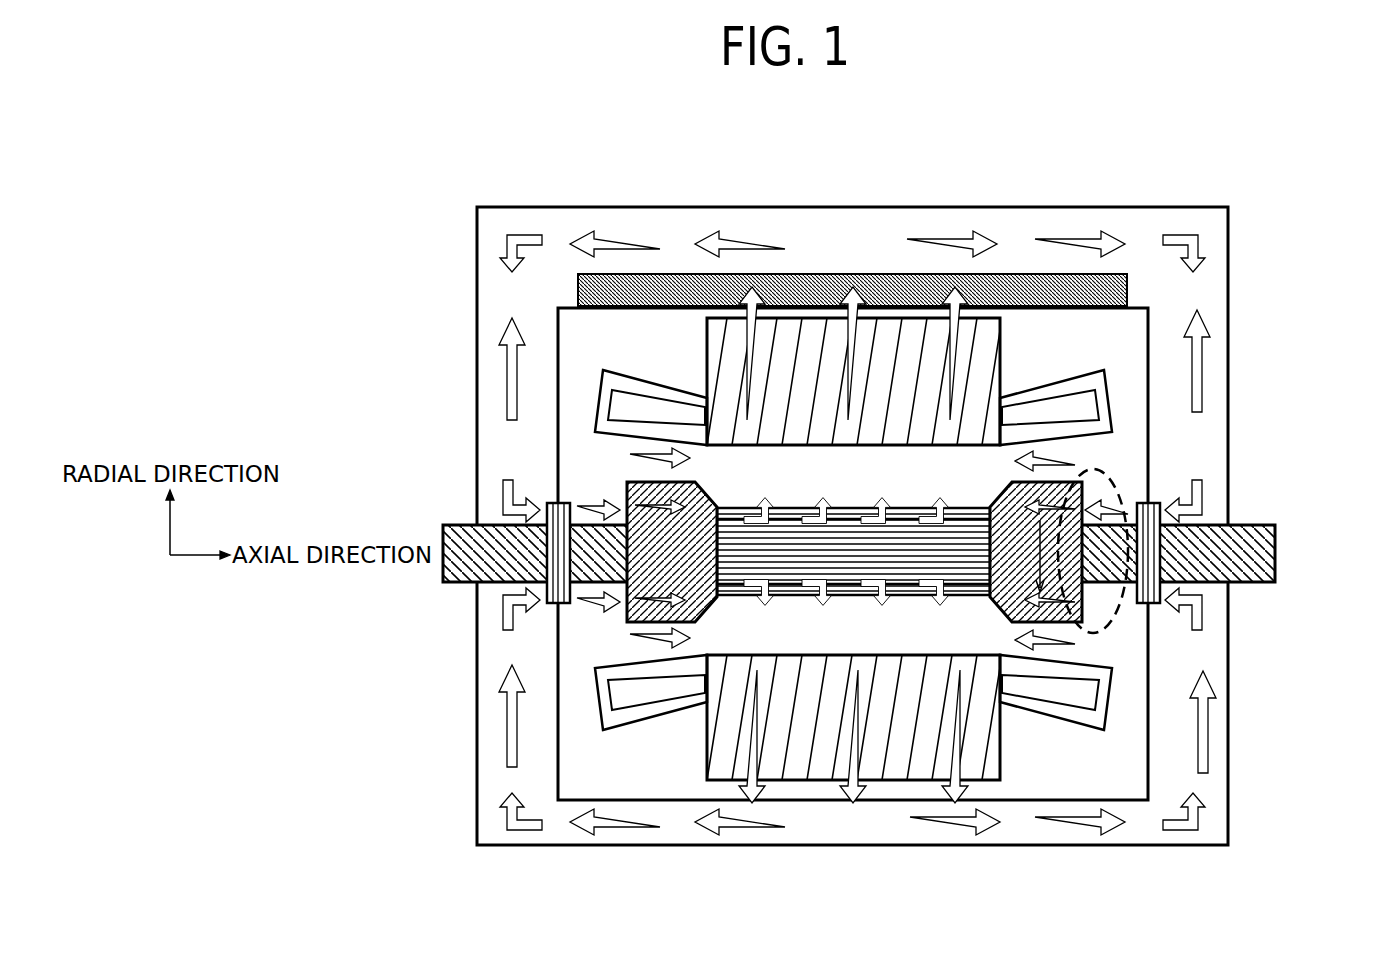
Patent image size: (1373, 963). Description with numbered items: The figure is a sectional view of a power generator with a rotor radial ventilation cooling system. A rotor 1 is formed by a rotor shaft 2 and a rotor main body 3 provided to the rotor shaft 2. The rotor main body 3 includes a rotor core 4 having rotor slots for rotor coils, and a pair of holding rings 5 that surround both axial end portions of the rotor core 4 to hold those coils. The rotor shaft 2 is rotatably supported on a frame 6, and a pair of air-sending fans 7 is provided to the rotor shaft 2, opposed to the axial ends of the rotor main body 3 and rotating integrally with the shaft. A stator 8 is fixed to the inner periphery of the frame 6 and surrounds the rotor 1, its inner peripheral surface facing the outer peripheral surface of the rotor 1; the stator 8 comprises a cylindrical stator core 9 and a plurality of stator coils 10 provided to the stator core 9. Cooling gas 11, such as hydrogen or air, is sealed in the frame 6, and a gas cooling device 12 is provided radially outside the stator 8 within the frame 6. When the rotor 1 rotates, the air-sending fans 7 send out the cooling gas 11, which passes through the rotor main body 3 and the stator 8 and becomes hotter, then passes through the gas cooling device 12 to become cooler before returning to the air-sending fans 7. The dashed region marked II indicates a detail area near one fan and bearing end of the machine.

The rotor 1 is at (975, 388).
The rotor shaft 2 is at (1240, 563).
The rotor main body 3 is at (762, 691).
The rotor core 4 is at (832, 557).
The holding ring 5 is at (628, 622).
The frame 6 is at (1058, 207).
The air-sending fan 7 is at (1160, 512).
The stator 8 is at (853, 470).
The stator core 9 is at (825, 335).
The stator coil 10 is at (672, 405).
The cooling gas 11 is at (1200, 366).
The gas cooling device 12 is at (888, 278).
The section II is at (1095, 625).